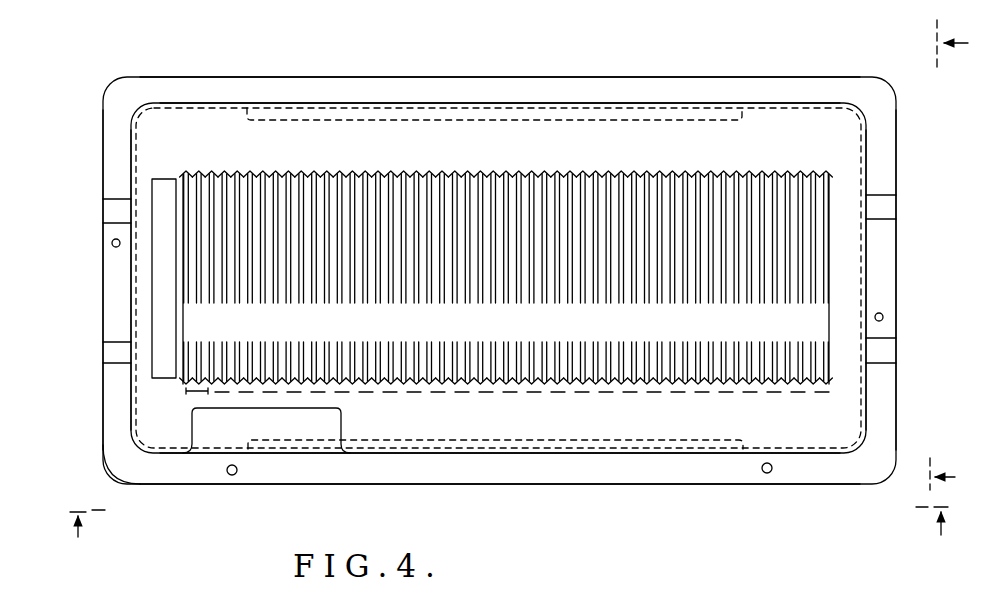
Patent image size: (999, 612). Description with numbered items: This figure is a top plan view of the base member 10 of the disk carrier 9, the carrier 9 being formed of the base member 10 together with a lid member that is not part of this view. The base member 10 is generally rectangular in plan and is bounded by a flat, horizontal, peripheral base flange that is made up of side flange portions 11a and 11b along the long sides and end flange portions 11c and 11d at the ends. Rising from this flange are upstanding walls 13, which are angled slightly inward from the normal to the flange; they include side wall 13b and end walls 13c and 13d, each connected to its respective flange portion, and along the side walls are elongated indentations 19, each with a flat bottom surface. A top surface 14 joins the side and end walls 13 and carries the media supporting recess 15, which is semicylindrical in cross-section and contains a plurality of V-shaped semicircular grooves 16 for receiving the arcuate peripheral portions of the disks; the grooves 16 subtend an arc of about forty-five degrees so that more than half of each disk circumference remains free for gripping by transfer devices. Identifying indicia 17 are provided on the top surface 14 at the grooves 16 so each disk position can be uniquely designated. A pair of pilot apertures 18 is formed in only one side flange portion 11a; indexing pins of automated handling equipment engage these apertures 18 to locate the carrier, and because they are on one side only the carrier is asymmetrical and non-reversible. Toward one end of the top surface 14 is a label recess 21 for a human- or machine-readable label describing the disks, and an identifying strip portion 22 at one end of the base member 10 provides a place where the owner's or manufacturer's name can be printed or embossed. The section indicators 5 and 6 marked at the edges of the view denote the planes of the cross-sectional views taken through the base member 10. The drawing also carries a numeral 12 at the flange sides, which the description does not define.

The section line 5- 5 is at (509, 522).
The section line 6- 6 is at (949, 255).
The carrier 9 is at (173, 512).
The base member 10 is at (543, 74).
The flange portion 11a is at (612, 485).
The flange portion 11b is at (431, 78).
The flange portion 11c is at (108, 106).
The flange portion 11d is at (886, 154).
The mounting flanges 12 is at (104, 275).
The upstanding walls 13 is at (797, 455).
The side wall 13b is at (200, 104).
The end wall 13c is at (124, 128).
The end wall 13d is at (869, 185).
The top surface 14 is at (840, 436).
The media supporting recess 15 is at (833, 310).
The semicircular grooves 16 is at (622, 171).
The identifying indicia 17 is at (200, 393).
The pilot apertures 18 is at (232, 476).
The elongated indentations 19 is at (305, 112).
The label recess 21 is at (227, 441).
The identifying strip portion 22 is at (170, 181).